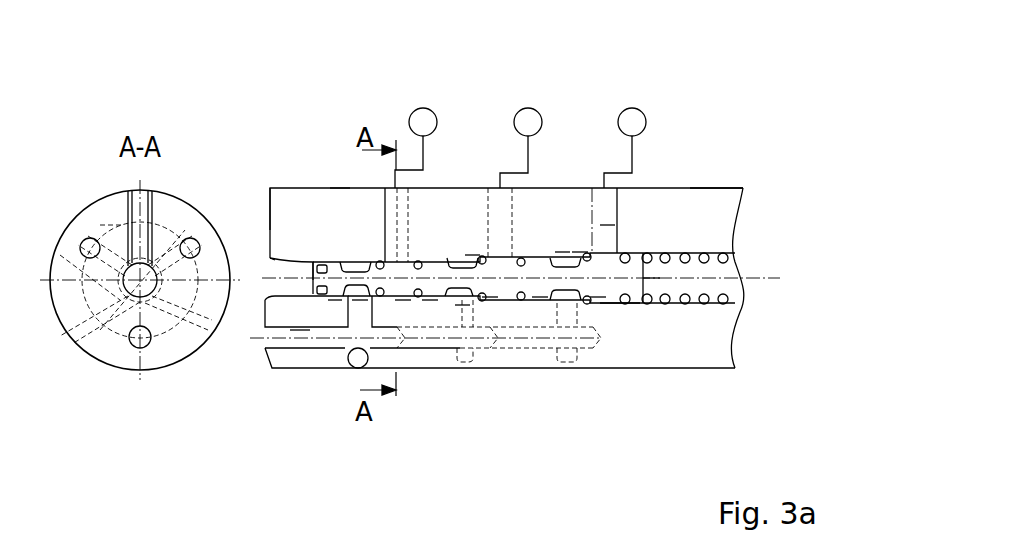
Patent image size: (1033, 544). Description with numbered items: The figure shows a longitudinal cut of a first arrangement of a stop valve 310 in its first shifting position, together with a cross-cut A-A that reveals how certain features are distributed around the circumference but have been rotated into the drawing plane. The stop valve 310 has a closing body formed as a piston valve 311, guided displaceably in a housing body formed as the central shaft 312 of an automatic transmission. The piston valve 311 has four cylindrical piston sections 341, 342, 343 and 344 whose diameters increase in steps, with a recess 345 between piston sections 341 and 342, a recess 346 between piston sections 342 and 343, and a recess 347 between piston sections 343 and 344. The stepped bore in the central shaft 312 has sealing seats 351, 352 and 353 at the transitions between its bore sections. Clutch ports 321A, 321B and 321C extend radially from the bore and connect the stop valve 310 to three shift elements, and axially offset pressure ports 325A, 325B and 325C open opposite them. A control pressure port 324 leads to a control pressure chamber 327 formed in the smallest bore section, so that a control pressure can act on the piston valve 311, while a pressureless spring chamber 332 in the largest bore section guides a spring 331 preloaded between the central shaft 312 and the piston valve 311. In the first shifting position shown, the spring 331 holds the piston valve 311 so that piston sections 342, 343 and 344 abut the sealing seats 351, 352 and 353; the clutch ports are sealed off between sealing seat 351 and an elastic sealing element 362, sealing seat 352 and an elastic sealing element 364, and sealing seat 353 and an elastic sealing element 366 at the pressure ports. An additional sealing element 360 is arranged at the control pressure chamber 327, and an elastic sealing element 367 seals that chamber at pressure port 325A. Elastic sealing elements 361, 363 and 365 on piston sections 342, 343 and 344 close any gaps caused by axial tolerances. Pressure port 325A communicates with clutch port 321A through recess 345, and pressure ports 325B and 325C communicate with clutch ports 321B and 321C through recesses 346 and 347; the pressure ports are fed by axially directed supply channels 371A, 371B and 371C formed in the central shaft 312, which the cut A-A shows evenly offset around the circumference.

The stop valve 310 is at (298, 188).
The piston valve 311 is at (647, 285).
The central shaft 312 is at (703, 352).
The clutch port 321A is at (127, 200).
The clutch port 321B is at (88, 292).
The clutch port 321C is at (175, 318).
The control pressure port 324 is at (268, 188).
The pressure port 325A is at (100, 330).
The pressure port 325B is at (148, 215).
The pressure port 325C is at (112, 225).
The control pressure chamber 327 is at (272, 250).
The spring 331 is at (705, 250).
The spring chamber 332 is at (708, 273).
The piston section 341 is at (335, 300).
The piston section 342 is at (403, 300).
The piston section 343 is at (540, 297).
The piston section 344 is at (598, 297).
The recess 345 is at (315, 262).
The recess 346 is at (462, 305).
The recess 347 is at (580, 252).
The sealing seat 351 is at (342, 188).
The sealing seat 352 is at (473, 255).
The sealing seat 353 is at (607, 225).
The sealing element 360 is at (300, 330).
The elastic sealing element 361 is at (360, 300).
The elastic sealing element 362 is at (430, 300).
The elastic sealing element 363 is at (490, 297).
The elastic sealing element 364 is at (563, 252).
The elastic sealing element 365 is at (623, 307).
The elastic sealing element 366 is at (690, 189).
The elastic sealing element 367 is at (318, 300).
The supply channel 371A is at (135, 345).
The supply channel 371B is at (190, 238).
The supply channel 371C is at (85, 240).